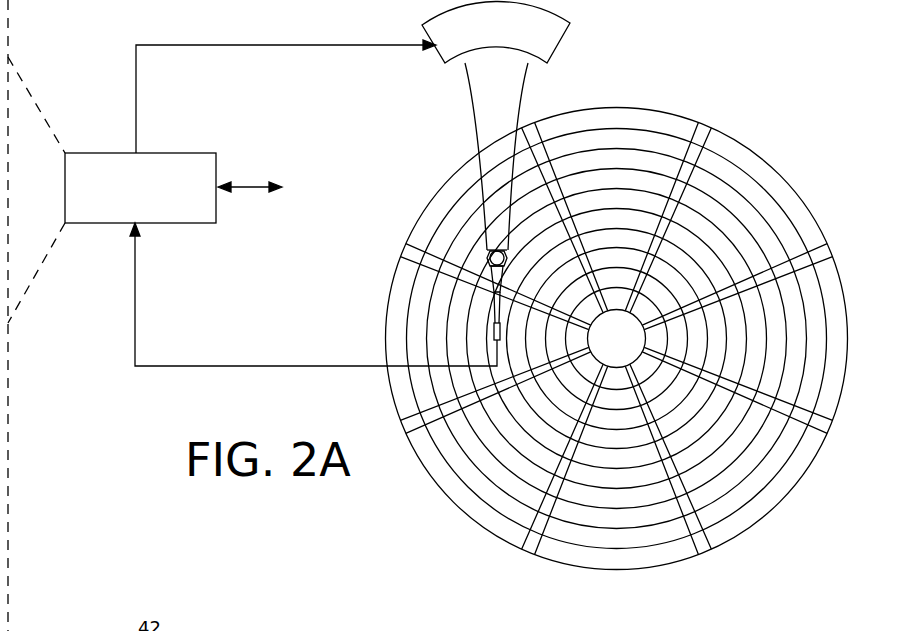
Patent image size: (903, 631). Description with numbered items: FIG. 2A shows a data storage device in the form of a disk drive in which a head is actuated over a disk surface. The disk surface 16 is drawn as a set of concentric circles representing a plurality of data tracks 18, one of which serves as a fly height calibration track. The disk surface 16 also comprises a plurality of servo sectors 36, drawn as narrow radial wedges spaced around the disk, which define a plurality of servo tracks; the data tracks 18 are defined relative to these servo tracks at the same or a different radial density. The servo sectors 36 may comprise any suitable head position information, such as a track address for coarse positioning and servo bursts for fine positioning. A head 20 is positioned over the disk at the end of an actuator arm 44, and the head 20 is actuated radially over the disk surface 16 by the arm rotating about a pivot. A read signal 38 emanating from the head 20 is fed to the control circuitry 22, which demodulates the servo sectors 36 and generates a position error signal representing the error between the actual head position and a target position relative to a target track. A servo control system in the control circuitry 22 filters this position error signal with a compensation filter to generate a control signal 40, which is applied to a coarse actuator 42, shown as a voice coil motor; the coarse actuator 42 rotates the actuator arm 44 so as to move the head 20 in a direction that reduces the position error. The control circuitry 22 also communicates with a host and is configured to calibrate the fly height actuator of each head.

The disk surface 16 is at (776, 162).
The data tracks 18 is at (621, 133).
The head 20 is at (464, 316).
The control circuitry 22 is at (180, 153).
The servo sectors 36 is at (616, 346).
The read signal 38 is at (243, 365).
The control signal 40 is at (136, 102).
The coarse actuator 42 is at (437, 58).
The actuator arm 44 is at (477, 137).